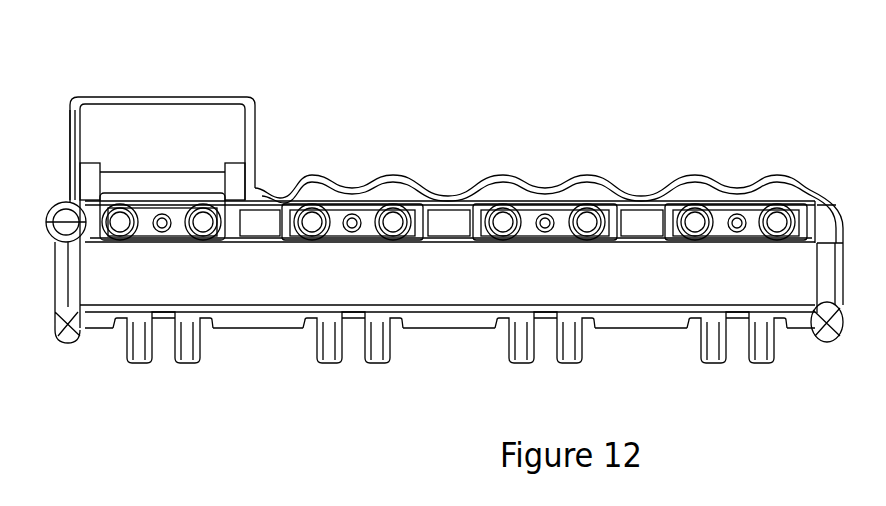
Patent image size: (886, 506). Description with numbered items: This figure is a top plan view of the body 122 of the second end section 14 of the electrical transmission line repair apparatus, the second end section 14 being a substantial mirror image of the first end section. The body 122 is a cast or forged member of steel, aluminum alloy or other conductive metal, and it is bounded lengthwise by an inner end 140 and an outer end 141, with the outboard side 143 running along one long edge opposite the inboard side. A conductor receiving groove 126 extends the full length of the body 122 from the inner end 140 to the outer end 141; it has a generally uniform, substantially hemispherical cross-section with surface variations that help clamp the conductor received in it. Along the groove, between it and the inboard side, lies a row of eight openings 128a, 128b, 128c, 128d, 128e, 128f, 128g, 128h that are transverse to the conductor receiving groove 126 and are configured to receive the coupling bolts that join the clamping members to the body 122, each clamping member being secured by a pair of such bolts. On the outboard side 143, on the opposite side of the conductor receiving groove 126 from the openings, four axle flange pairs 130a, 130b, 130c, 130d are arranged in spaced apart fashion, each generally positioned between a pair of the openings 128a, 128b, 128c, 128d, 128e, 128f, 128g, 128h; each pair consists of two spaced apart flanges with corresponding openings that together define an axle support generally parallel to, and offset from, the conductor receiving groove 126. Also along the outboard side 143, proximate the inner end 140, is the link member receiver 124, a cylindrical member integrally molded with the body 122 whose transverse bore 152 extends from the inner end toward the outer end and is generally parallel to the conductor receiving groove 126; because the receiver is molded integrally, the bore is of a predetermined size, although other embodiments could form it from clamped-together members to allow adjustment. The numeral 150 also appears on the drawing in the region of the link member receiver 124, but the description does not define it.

The second end section 14 is at (383, 97).
The body 122 is at (460, 392).
The link member receiver 124 is at (163, 95).
The conductor receiving groove 126 is at (458, 267).
The opening 128a is at (125, 200).
The opening 128b is at (203, 200).
The opening 128c is at (303, 210).
The opening 128d is at (398, 202).
The opening 128e is at (507, 202).
The opening 128f is at (581, 198).
The opening 128g is at (697, 200).
The opening 128h is at (775, 202).
The axle flange pair 130a is at (150, 365).
The axle flange pair 130b is at (338, 372).
The axle flange pair 130c is at (527, 372).
The axle flange pair 130d is at (712, 372).
The inner end 140 is at (60, 290).
The outer end 141 is at (827, 268).
The outboard side 143 is at (232, 332).
The top wall 150 is at (218, 95).
The transverse bore 152 is at (70, 128).